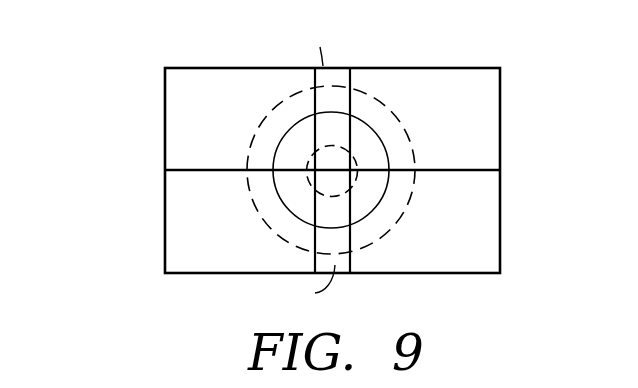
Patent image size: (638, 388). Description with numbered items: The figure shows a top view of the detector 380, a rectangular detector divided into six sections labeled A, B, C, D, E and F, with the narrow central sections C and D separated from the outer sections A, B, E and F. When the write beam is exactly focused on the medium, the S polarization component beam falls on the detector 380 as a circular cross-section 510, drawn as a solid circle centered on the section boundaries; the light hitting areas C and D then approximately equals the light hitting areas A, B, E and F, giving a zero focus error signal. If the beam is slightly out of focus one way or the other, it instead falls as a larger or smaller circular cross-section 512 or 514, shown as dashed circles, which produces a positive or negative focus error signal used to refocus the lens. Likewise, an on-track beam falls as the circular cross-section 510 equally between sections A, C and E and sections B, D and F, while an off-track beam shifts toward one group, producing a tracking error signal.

The detector 380 is at (138, 218).
The circular cross-section 510 is at (367, 122).
The circular cross-section 512 is at (405, 128).
The circular cross-section 514 is at (354, 155).